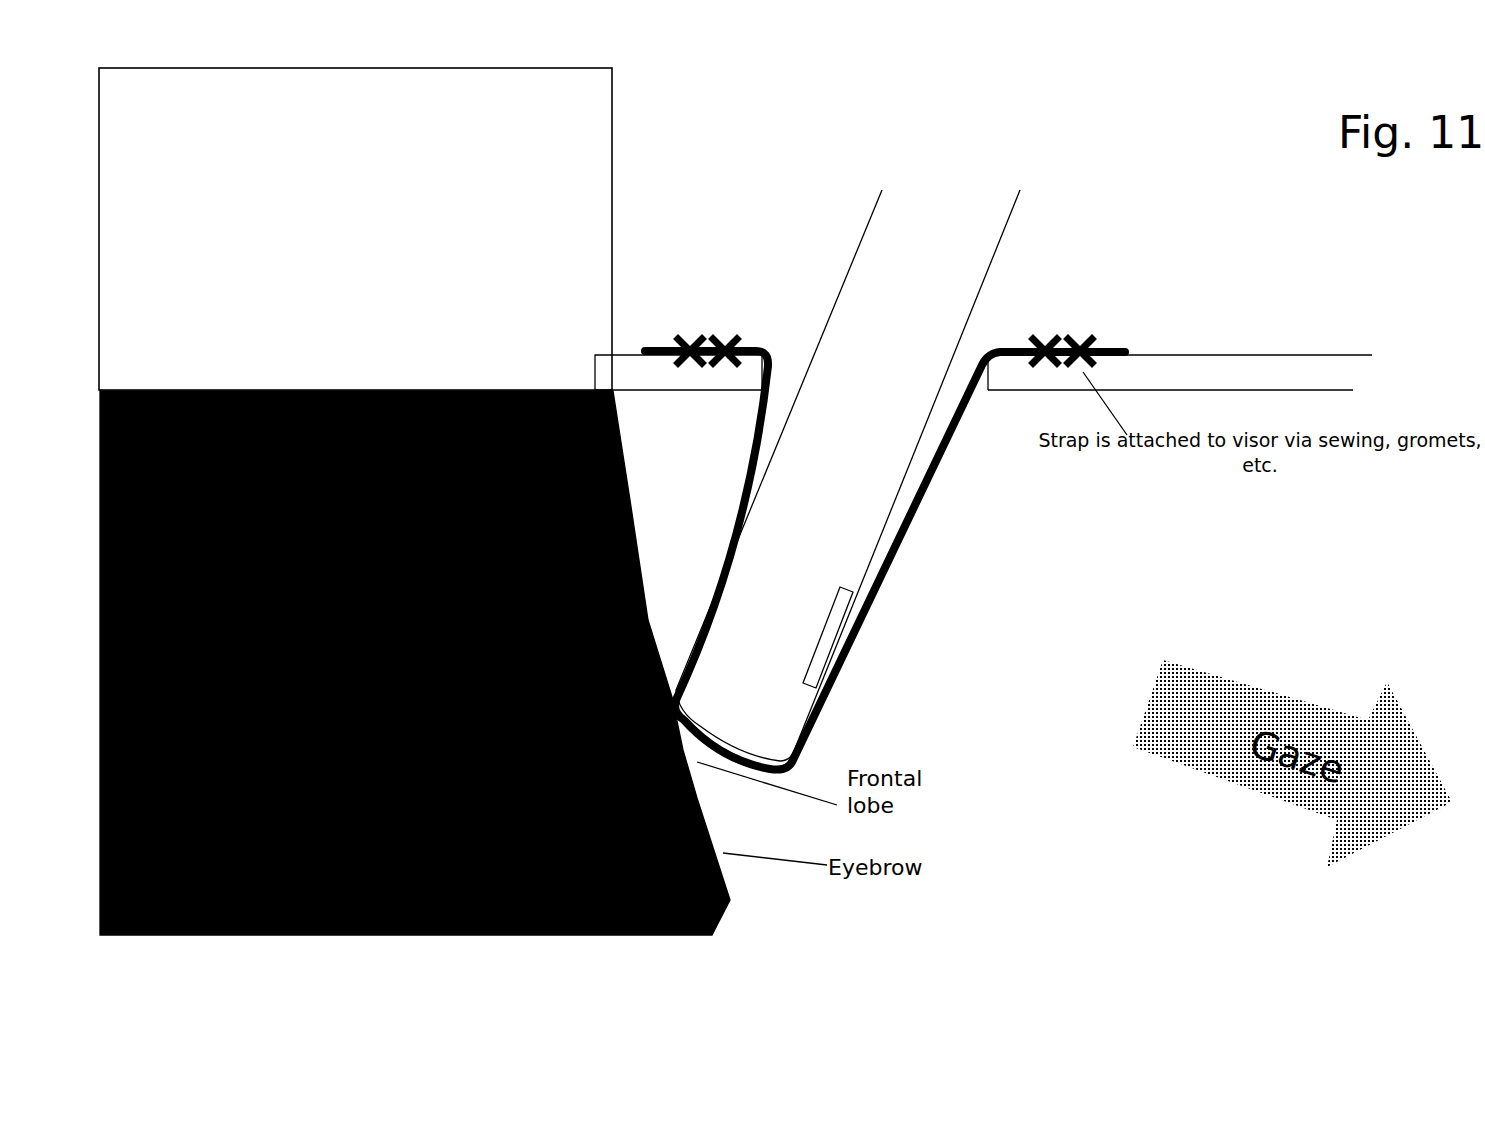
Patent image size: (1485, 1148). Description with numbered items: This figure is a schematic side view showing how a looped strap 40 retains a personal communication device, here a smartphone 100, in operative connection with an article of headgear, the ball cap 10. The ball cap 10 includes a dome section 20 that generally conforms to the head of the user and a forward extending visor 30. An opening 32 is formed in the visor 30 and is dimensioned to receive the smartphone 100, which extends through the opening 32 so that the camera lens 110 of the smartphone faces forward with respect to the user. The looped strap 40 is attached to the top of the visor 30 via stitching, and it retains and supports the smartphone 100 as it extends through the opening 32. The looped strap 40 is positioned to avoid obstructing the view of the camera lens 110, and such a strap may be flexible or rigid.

The ball cap 10 is at (630, 142).
The dome section 20 is at (588, 288).
The visor 30 is at (1253, 367).
The opening 32 is at (780, 358).
The looped strap 40 is at (955, 432).
The smartphone 100 is at (958, 292).
The camera lens 110 is at (847, 648).